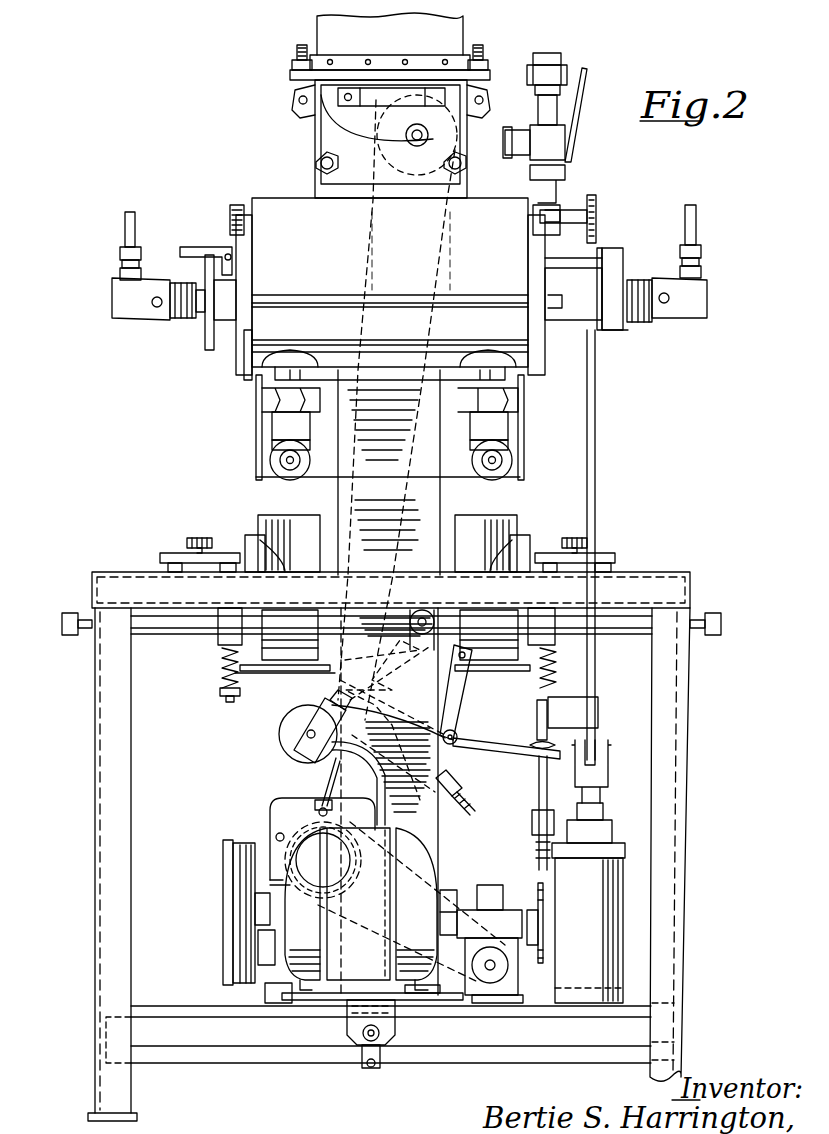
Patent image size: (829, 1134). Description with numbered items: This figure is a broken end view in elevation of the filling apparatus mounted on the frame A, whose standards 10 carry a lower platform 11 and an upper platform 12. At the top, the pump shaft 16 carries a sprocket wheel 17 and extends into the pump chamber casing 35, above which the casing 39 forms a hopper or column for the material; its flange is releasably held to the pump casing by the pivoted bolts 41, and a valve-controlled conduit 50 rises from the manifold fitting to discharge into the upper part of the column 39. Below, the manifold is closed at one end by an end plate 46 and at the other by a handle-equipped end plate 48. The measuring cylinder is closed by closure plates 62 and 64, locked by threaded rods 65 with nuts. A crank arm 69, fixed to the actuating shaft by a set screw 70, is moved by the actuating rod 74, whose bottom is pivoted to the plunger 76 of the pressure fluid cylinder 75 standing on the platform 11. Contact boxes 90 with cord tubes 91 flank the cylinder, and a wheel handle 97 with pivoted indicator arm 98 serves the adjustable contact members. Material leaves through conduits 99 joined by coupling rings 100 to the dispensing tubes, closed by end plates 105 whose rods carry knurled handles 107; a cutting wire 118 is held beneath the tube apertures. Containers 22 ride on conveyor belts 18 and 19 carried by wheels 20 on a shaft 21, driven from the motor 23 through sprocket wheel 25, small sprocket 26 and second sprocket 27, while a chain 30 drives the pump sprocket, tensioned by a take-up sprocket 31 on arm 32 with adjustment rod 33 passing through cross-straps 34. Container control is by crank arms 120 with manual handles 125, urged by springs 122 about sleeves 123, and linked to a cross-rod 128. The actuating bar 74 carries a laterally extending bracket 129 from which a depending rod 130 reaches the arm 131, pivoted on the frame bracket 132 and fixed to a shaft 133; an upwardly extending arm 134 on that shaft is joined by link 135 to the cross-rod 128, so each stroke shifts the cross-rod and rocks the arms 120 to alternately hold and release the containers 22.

The casing 39 is at (450, 30).
The pivoted bolts 41 is at (296, 52).
The pump chamber casing 35 is at (322, 137).
The pump shaft 16 is at (430, 135).
The sprocket wheel 17 is at (387, 205).
The valve-controlled conduit 50 is at (556, 143).
The threaded rods 65 is at (318, 298).
The chain 30 is at (427, 272).
The end plate 46 is at (237, 206).
The closure plate 62 is at (238, 345).
The wheel handle 97 is at (205, 338).
The pivoted indicator arm 98 is at (196, 246).
The box 90 is at (112, 296).
The tubes 91 is at (127, 225).
The handle-equipped end plate 48 is at (596, 212).
The closure plate 64 is at (538, 340).
The set screw 70 is at (618, 250).
The crank arm 69 is at (608, 328).
The actuating rod 74 is at (596, 470).
The coupling ring 100 is at (265, 398).
The conduit 99 is at (280, 438).
The end plate 105 is at (273, 460).
The knurled handle 107 is at (283, 467).
The cutting wire 118 is at (330, 478).
The containers 22 is at (292, 522).
The conveyor belt 18 is at (258, 540).
The conveyor belt 19 is at (510, 545).
The manual handle 125 is at (198, 537).
The crank arm 120 is at (178, 555).
The upper platform 12 is at (668, 590).
The standards 10 is at (126, 812).
The shaft 21 is at (608, 625).
The sleeve 123 is at (228, 615).
The spring 122 is at (222, 660).
The cross-rod 128 is at (240, 700).
The wheels 20 is at (295, 625).
The arm 32 is at (300, 678).
The take-up sprocket 31 is at (282, 733).
The link 135 is at (388, 682).
The shaft 133 is at (445, 738).
The upwardly extending arm 134 is at (462, 690).
The bracket 132 is at (458, 733).
The arm 131 is at (498, 758).
The laterally extending bracket 129 is at (576, 710).
The depending rod 130 is at (537, 736).
The cross-straps 34 is at (455, 782).
The adjustment rod 33 is at (470, 806).
The plunger 76 is at (582, 797).
The motor 23 is at (430, 866).
The sprocket wheel 25 is at (342, 895).
The second sprocket 27 is at (537, 886).
The small sprocket 26 is at (502, 975).
The pressure fluid cylinder 75 is at (600, 915).
The lower platform 11 is at (437, 1005).
The frame A is at (680, 757).